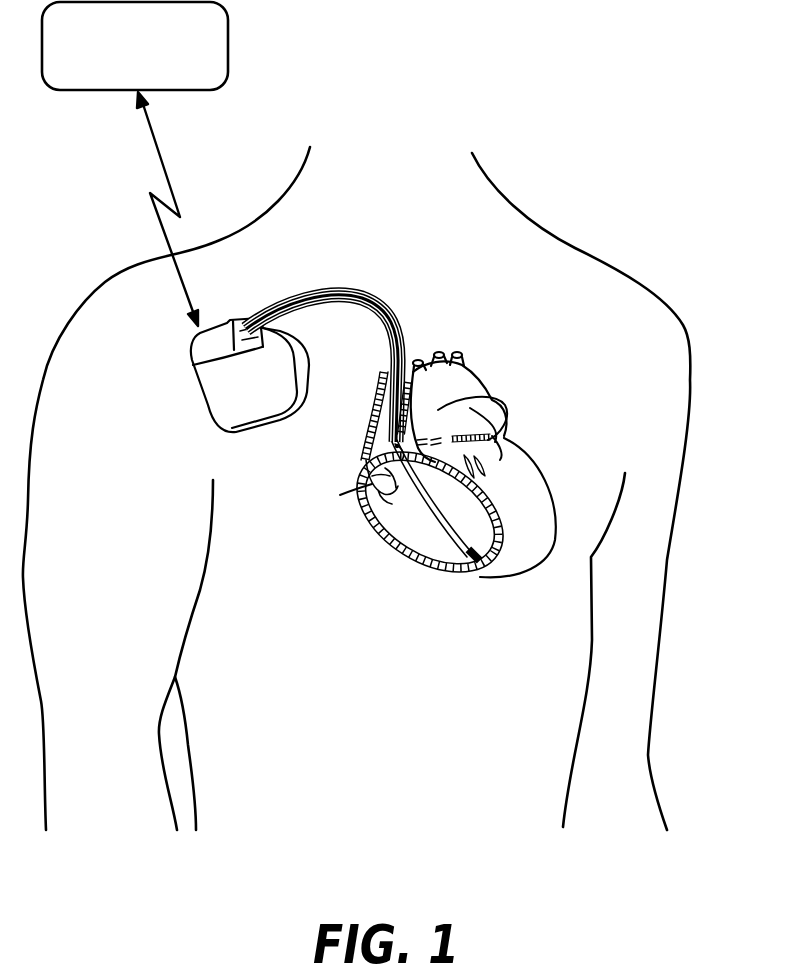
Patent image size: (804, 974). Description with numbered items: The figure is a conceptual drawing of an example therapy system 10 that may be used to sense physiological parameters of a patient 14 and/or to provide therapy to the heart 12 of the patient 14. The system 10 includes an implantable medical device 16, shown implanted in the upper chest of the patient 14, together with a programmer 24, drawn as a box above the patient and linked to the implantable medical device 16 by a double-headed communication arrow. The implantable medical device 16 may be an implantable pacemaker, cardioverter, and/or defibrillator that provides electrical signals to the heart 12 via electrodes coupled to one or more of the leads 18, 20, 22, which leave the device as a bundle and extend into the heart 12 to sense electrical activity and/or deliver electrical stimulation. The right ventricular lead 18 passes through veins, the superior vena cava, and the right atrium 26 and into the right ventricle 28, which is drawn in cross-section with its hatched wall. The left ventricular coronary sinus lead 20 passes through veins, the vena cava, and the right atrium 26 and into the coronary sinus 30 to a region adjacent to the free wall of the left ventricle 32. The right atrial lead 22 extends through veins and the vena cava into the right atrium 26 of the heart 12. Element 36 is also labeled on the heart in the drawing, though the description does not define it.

The system 10 is at (559, 133).
The heart 12 is at (436, 496).
The patient 14 is at (628, 268).
The implantable medical device (IMD) 16 is at (188, 406).
The right ventricular (RV) lead 18 is at (391, 325).
The left ventricular (LV) coronary sinus lead 20 is at (291, 297).
The right atrial (RA) lead 22 is at (376, 345).
The programmer 24 is at (118, 71).
The right atrium 26 is at (377, 474).
The right ventricle 28 is at (407, 529).
The coronary sinus 30 is at (412, 368).
The left ventricle 32 is at (517, 493).
The left atrium 36 is at (463, 392).